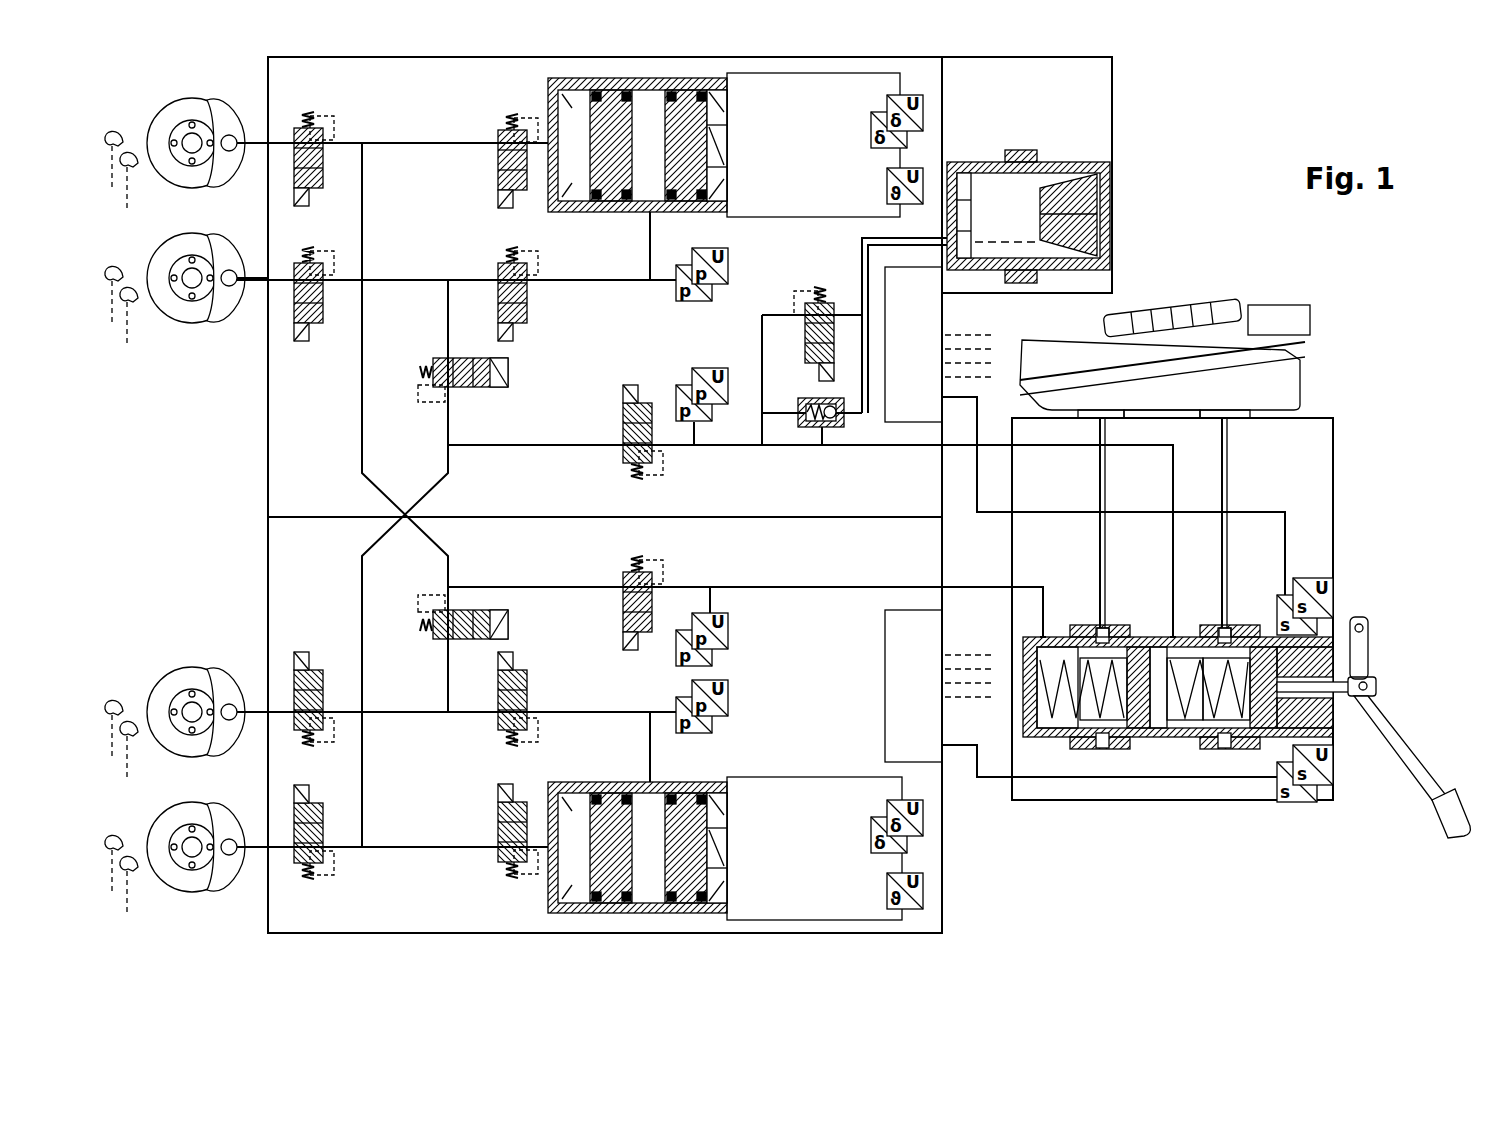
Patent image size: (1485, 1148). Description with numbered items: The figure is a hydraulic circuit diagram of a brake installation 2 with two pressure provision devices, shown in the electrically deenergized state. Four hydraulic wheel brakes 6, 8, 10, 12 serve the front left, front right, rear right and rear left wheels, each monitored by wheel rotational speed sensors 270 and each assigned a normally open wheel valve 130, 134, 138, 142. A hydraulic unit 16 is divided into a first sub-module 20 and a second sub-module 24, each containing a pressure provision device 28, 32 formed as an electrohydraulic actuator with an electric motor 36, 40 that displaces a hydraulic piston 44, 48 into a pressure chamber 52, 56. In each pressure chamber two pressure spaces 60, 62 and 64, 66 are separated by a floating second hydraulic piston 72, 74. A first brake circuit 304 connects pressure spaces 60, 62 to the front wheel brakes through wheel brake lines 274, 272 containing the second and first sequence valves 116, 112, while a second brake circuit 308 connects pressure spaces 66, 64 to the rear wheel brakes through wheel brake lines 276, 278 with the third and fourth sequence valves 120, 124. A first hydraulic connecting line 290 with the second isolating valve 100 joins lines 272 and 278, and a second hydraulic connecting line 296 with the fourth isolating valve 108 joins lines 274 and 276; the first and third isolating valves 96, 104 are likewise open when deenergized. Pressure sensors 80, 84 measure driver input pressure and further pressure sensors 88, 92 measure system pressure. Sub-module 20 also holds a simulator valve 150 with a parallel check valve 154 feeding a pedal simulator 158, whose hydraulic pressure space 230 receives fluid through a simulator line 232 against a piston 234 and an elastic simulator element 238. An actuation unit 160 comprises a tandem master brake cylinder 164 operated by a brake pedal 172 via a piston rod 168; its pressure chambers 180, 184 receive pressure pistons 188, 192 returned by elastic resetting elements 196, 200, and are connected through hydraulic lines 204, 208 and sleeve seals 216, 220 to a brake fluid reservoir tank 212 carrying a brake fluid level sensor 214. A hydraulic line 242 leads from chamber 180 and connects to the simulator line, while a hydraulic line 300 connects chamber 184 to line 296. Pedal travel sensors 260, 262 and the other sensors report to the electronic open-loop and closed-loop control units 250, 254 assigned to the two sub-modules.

The brake installation 2 is at (1152, 172).
The wheel brake 6 is at (176, 94).
The wheel brake 8 is at (190, 338).
The wheel brake 10 is at (165, 662).
The wheel brake 12 is at (242, 878).
The hydraulic unit 16 is at (461, 901).
The first sub-module 20 is at (290, 480).
The second sub-module 24 is at (290, 535).
The pressure provision device 28 is at (812, 232).
The pressure provision device 32 is at (874, 833).
The electric motor 36 is at (946, 78).
The electric motor 40 is at (852, 805).
The hydraulic piston 44 is at (605, 165).
The hydraulic piston 48 is at (605, 823).
The pressure chamber 52 is at (597, 282).
The pressure chamber 56 is at (590, 778).
The pressure space 60 is at (565, 120).
The pressure space 62 is at (643, 175).
The pressure space 64 is at (560, 880).
The pressure space 66 is at (655, 800).
The second hydraulic piston 72 is at (597, 178).
The second hydraulic piston 74 is at (622, 795).
The pressure sensor 80 is at (684, 425).
The pressure sensor 84 is at (728, 633).
The pressure sensor 88 is at (728, 278).
The pressure sensor 92 is at (728, 700).
The first isolating valve 96 is at (623, 450).
The second isolating valve 100 is at (460, 390).
The third isolating valve 104 is at (620, 575).
The fourth isolating valve 108 is at (470, 610).
The first sequence valve 112 is at (530, 300).
The second sequence valve 116 is at (496, 165).
The third sequence valve 120 is at (530, 690).
The fourth sequence valve 124 is at (497, 822).
The wheel valve 130 is at (325, 162).
The wheel valve 134 is at (318, 312).
The wheel valve 138 is at (325, 700).
The wheel valve 142 is at (323, 830).
The simulator valve 150 is at (805, 338).
The check valve 154 is at (822, 430).
The pedal simulator 158 is at (1075, 175).
The actuation unit 160 is at (1374, 606).
The tandem master brake cylinder 164 is at (1183, 713).
The piston rod 168 is at (1340, 694).
The brake pedal 172 is at (1395, 722).
The pressure chamber 180 is at (1180, 735).
The pressure chamber 184 is at (1060, 720).
The pressure piston 188 is at (1268, 710).
The pressure piston 192 is at (1145, 735).
The elastic resetting element 196 is at (1181, 663).
The elastic resetting element 200 is at (1056, 665).
The hydraulic line 204 is at (1100, 478).
The hydraulic line 208 is at (1228, 478).
The brake fluid reservoir tank 212 is at (1292, 378).
The brake fluid level sensor 214 is at (1312, 318).
The sleeve seal 216 is at (1127, 638).
The sleeve seal 220 is at (1250, 638).
The hydraulic pressure space 230 is at (967, 175).
The simulator line 232 is at (865, 240).
The piston 234 is at (1025, 185).
The elastic simulator element 238 is at (1065, 185).
The hydraulic line 242 is at (885, 450).
The electronic open-loop and closed-loop control unit 250 is at (948, 298).
The electronic open-loop and closed-loop control unit 254 is at (985, 780).
The pedal travel sensor 260 is at (1322, 582).
The pedal travel sensor 262 is at (1300, 800).
The wheel rotational speed sensor 270 is at (150, 170).
The hydraulic wheel brake line 272 is at (623, 283).
The hydraulic wheel brake line 274 is at (402, 140).
The hydraulic wheel brake line 276 is at (400, 712).
The hydraulic wheel brake line 278 is at (383, 850).
The first hydraulic connecting line 290 is at (445, 352).
The second hydraulic connecting line 296 is at (372, 395).
The hydraulic line 300 is at (772, 585).
The first brake circuit 304 is at (255, 325).
The second brake circuit 308 is at (258, 660).